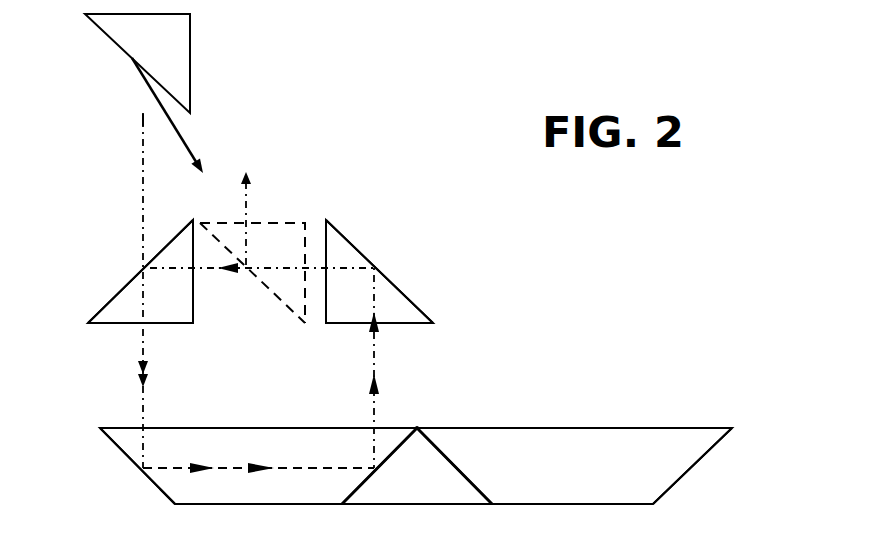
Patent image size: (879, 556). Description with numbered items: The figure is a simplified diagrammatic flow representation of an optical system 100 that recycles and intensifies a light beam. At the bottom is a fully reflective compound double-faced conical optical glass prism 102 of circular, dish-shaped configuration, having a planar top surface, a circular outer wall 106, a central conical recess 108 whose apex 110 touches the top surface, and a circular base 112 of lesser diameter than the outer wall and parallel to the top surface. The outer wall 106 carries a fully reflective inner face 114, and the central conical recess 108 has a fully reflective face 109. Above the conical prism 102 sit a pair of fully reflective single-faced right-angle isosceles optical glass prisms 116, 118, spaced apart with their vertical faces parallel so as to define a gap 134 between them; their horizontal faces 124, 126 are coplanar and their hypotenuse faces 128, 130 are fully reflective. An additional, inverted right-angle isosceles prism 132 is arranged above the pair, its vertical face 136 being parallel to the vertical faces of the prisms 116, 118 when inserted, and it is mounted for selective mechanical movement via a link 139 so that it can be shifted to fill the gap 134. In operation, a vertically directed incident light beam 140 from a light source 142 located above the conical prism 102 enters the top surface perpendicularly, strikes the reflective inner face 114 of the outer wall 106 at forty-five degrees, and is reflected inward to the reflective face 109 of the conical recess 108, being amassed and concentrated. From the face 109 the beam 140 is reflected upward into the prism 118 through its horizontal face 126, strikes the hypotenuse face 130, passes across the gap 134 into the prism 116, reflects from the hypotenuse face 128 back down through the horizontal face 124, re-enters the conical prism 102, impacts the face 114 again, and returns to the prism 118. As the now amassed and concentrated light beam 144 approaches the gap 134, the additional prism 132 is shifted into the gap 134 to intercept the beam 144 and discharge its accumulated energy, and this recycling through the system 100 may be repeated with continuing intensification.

The optical system 100 is at (611, 257).
The compound double-faced conical optical glass prism 102 is at (600, 428).
The circular outer wall 106 is at (134, 466).
The central conical recess 108 is at (427, 494).
The reflective face of central conical recess 109 is at (470, 478).
The apex of central conical recess 110 is at (417, 428).
The circular base 112 is at (620, 497).
The inner reflective face of outer wall 114 is at (690, 478).
The first single-faced right-angle isosceles optical glass prism 116 is at (124, 256).
The second single-faced right-angle isosceles optical glass prism 118 is at (402, 251).
The horizontal face of first right-angle prism 124 is at (172, 323).
The horizontal face of second right-angle prism 126 is at (400, 324).
The hypotenuse face of first right-angle prism 128 is at (117, 291).
The hypotenuse face of second right-angle prism 130 is at (418, 301).
The additional single-faced right-angle isosceles optical glass prism 132 is at (208, 57).
The gap 134 is at (314, 216).
The vertical face of additional prism 136 is at (190, 87).
The link 139 is at (187, 143).
The incident light beam 140 is at (143, 192).
The light source 142 is at (143, 120).
The amassed and concentrated light beam 144 is at (366, 364).